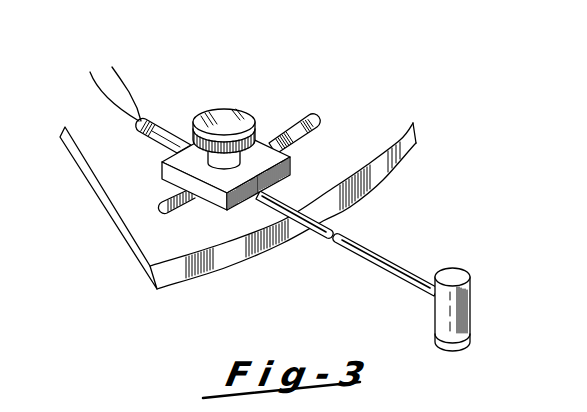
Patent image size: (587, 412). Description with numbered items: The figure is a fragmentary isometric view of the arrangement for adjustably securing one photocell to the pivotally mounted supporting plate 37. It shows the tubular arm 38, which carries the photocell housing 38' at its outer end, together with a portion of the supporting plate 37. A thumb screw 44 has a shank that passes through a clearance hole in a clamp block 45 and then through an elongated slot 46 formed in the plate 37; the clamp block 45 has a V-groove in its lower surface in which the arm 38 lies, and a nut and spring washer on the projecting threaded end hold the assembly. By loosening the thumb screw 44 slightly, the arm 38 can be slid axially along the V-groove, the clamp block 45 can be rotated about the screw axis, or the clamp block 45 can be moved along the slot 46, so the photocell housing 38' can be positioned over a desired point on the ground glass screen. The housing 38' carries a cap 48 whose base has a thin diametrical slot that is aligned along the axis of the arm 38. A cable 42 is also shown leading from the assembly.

The supporting plate 37 is at (105, 207).
The tubular arm 38 is at (327, 221).
The photocell housing 38' is at (424, 265).
The cable 42 is at (112, 67).
The thumb screw 44 is at (220, 108).
The clamp block 45 is at (173, 173).
The elongated slot 46 is at (308, 113).
The cap 48 is at (458, 343).